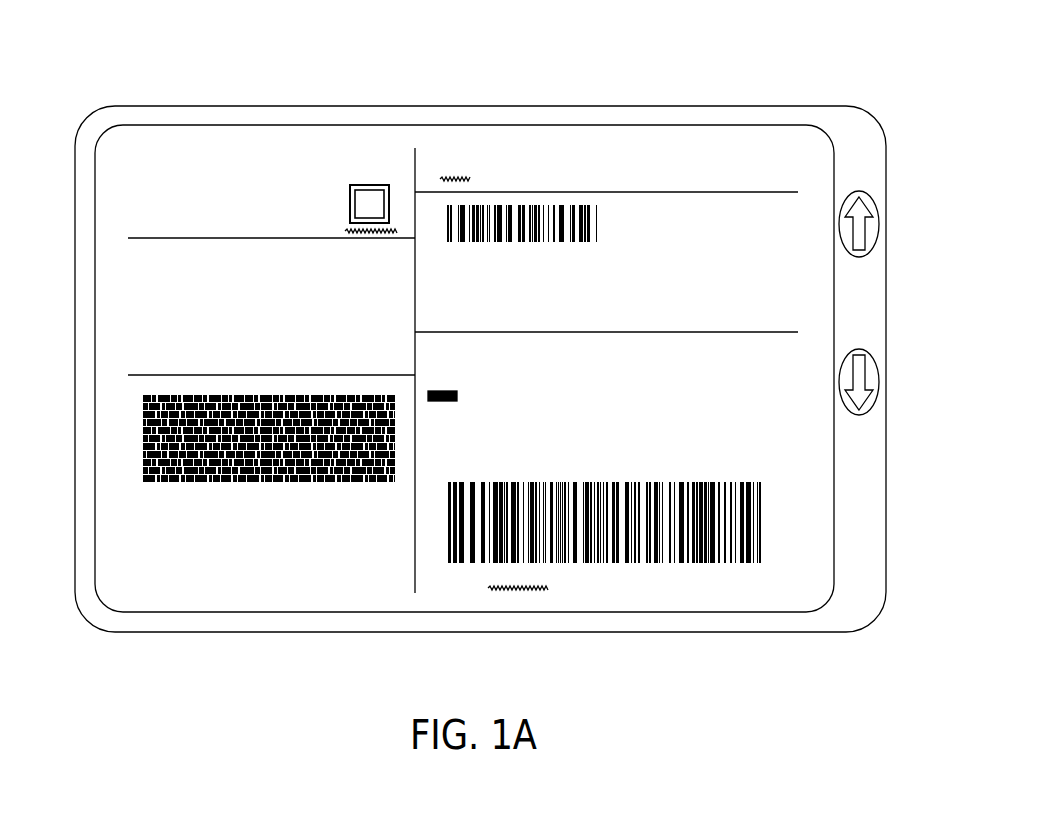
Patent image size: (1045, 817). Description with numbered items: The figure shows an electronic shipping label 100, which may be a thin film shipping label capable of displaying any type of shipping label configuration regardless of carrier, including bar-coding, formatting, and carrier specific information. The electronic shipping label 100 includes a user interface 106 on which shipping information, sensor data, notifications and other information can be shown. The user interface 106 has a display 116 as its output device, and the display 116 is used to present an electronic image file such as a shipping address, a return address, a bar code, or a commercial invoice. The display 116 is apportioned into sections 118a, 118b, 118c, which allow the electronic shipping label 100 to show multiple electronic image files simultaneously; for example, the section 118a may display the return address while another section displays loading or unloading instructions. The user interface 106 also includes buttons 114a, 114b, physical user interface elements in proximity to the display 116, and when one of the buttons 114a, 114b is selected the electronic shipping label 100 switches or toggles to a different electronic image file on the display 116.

The electronic shipping label 100 is at (142, 76).
The user interface 106 is at (148, 625).
The display 116 is at (113, 588).
The button 114a is at (874, 210).
The button 114b is at (870, 368).
The section 118a is at (180, 133).
The section 118b is at (103, 340).
The section 118c is at (345, 590).